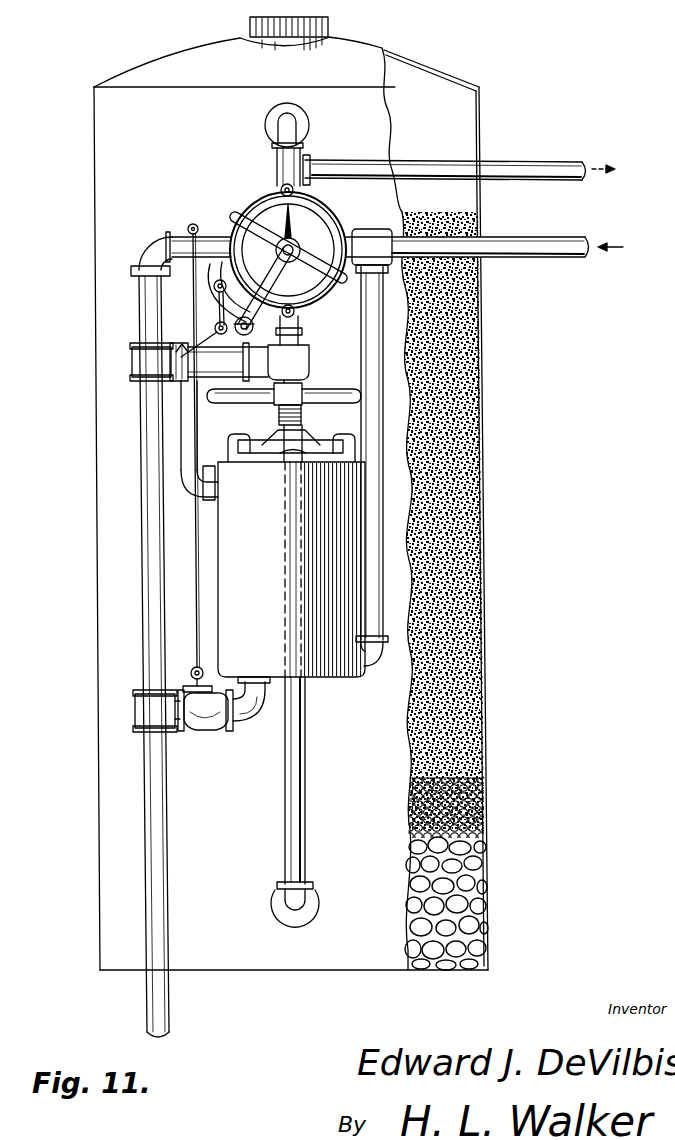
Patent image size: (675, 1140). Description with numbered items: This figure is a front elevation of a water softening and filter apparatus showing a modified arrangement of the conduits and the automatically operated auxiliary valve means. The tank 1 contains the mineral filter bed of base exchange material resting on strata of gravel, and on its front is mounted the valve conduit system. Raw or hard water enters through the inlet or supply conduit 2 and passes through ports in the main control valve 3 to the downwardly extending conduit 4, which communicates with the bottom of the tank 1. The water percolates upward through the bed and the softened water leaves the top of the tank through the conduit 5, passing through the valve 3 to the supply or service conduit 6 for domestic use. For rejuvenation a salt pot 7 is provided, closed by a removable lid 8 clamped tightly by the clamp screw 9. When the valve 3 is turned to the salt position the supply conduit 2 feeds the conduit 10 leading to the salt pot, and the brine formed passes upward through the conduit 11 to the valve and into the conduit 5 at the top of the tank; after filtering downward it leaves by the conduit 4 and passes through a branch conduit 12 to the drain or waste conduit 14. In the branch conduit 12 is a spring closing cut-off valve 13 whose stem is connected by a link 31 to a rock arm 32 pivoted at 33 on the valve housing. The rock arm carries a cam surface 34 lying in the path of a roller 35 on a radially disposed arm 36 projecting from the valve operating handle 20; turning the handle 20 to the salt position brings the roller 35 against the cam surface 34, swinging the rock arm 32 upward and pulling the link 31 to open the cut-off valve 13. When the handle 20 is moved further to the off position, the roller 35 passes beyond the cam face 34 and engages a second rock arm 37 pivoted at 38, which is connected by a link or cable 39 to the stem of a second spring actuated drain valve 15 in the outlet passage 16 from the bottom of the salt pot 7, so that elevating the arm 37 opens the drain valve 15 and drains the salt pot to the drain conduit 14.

The tank 1 is at (106, 362).
The inlet or supply conduit 2 is at (503, 247).
The main control valve 3 is at (323, 218).
The downwardly extending conduit 4 is at (298, 322).
The conduit 5 is at (283, 158).
The supply or service conduit 6 is at (503, 170).
The salt pot 7 is at (319, 524).
The removable lid 8 is at (315, 452).
The clamp screw 9 is at (301, 412).
The conduit 10 is at (378, 373).
The conduit 11 is at (205, 331).
The branch conduit 12 is at (279, 343).
The cut-off valve 13 is at (239, 362).
The drain or waste conduit 14 is at (152, 436).
The drain valve 15 is at (208, 727).
The outlet passage 16 is at (253, 712).
The valve operating handle 20 is at (243, 222).
The link 31 is at (217, 300).
The rock arm 32 is at (280, 301).
The pivot 33 is at (297, 311).
The cam surface 34 is at (214, 284).
The roller 35 is at (272, 330).
The radially disposed arm 36 is at (274, 282).
The second rock arm 37 is at (262, 193).
The pivot 38 is at (311, 170).
The link or cable 39 is at (195, 531).